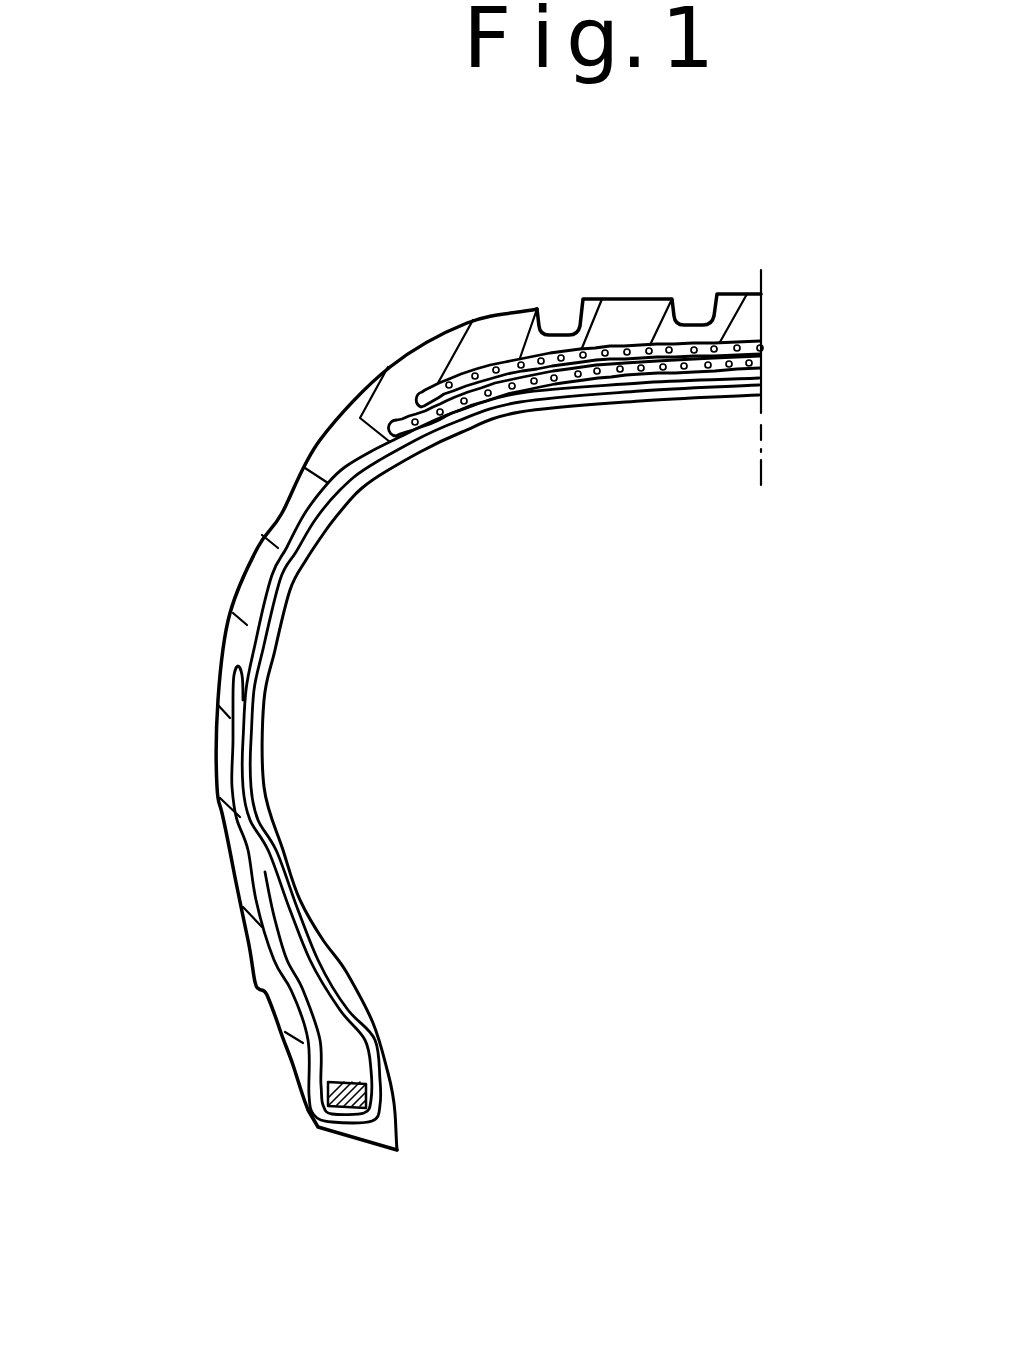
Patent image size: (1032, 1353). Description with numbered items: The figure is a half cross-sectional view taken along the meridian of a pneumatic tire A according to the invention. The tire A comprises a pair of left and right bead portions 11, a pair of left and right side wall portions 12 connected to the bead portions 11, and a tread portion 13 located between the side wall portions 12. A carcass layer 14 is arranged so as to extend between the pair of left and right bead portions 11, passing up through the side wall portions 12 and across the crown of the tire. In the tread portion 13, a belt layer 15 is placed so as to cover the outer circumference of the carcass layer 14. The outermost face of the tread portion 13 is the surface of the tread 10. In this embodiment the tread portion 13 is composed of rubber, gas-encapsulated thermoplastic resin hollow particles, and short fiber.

The surface of the tread 10 is at (635, 298).
The bead portion 11 is at (390, 1070).
The side wall portion 12 is at (217, 788).
The tread portion 13 is at (747, 320).
The carcass layer 14 is at (288, 582).
The belt layer 15 is at (593, 360).
The pneumatic tire A is at (812, 280).